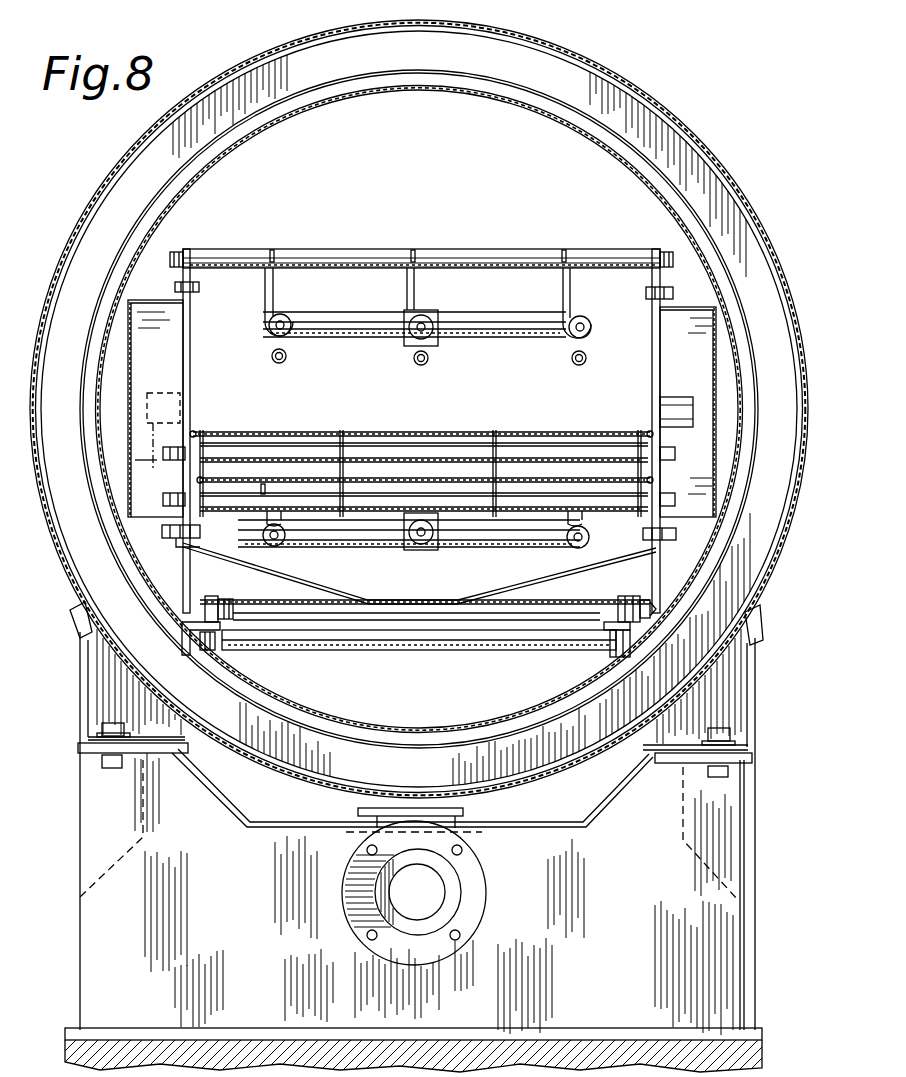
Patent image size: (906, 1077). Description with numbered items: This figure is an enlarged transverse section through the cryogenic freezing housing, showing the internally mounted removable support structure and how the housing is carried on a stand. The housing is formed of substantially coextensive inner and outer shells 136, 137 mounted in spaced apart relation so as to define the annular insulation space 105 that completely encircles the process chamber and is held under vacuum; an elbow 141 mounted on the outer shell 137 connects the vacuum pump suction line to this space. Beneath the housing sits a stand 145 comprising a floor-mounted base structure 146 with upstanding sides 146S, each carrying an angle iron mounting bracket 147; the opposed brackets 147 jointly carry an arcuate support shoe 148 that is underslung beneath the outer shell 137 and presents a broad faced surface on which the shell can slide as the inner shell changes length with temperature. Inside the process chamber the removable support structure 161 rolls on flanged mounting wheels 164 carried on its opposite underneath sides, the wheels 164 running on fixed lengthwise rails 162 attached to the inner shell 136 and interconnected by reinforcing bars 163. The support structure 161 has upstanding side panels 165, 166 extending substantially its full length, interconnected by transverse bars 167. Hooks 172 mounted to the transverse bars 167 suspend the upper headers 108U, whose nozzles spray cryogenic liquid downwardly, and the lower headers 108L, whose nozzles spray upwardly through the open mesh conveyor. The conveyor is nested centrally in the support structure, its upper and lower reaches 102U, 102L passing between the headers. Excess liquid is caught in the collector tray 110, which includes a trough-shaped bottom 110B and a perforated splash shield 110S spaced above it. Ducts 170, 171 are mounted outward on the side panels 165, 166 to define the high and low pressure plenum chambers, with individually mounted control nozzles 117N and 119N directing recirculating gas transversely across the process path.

The outer shell 137 is at (229, 68).
The inner shell 136 is at (342, 90).
The annular insulation space 105 is at (412, 703).
The transverse bars 167 is at (215, 252).
The hooks 172 is at (272, 250).
The side panel 165 is at (190, 347).
The side panel 166 is at (652, 365).
The upper headers 108U is at (488, 324).
The duct 170 is at (130, 378).
The control nozzles 117N is at (160, 436).
The duct 171 is at (716, 375).
The control nozzles 119N is at (668, 397).
The upper reach 102U is at (305, 412).
The lower reach 102L is at (458, 478).
The lower headers 108L is at (495, 532).
The perforated splash shield 110S is at (272, 557).
The trough-shaped bottom 110B is at (352, 600).
The reinforcing bars 163 is at (440, 655).
The flanged mounting wheels 164 is at (212, 600).
The lengthwise rails 162 is at (212, 652).
The collector tray 110 is at (515, 592).
The removable support structure 161 is at (680, 582).
The angle iron mounting bracket 147 is at (82, 690).
The arcuate support shoe 148 is at (310, 797).
The upstanding sides 146S is at (100, 782).
The base structure 146 is at (260, 922).
The stand 145 is at (745, 830).
The elbow 141 is at (398, 860).